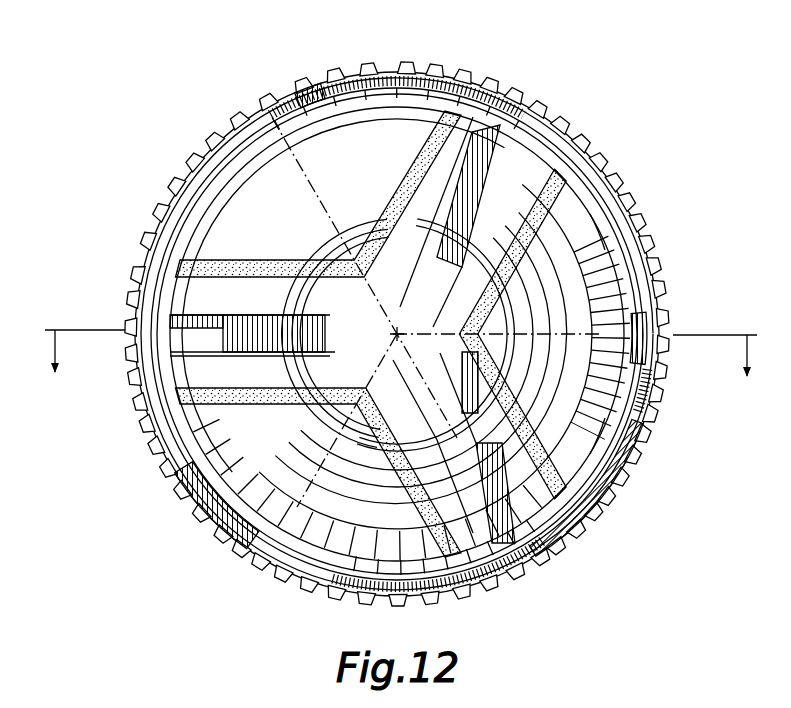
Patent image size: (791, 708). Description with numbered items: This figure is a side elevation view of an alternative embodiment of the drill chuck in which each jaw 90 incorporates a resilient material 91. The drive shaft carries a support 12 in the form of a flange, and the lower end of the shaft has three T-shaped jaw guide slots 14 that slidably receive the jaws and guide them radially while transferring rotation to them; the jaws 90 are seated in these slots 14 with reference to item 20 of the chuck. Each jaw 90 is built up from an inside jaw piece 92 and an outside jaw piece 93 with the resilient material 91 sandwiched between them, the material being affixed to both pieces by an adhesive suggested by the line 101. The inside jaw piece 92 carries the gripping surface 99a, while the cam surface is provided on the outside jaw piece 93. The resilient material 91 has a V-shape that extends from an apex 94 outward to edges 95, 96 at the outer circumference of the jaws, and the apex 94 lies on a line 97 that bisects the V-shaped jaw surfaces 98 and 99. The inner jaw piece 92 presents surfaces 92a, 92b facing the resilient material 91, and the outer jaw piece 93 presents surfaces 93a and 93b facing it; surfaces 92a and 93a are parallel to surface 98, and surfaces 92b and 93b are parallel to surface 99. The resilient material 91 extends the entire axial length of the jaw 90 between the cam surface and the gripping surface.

The support 12 is at (178, 466).
The jaw guide slots 14 is at (397, 370).
The sprocket teeth 20 is at (185, 510).
The jaw 90 is at (290, 195).
The resilient material 91 is at (580, 235).
The inside jaw piece 92 is at (530, 190).
The surface of inner jaw piece 92a is at (557, 203).
The surface of inner jaw piece 92b is at (617, 460).
The outside jaw piece 93 is at (585, 263).
The surface of outer jaw piece 93a is at (578, 215).
The surface of outer jaw piece 93b is at (645, 420).
The apex 94 is at (440, 358).
The edge 95 is at (592, 522).
The edge 96 is at (560, 210).
The line 97 is at (640, 364).
The jaw surface 98 is at (538, 115).
The jaw surface 99 is at (526, 578).
The gripping surface 99a is at (385, 300).
The adhesive line 101 is at (428, 64).